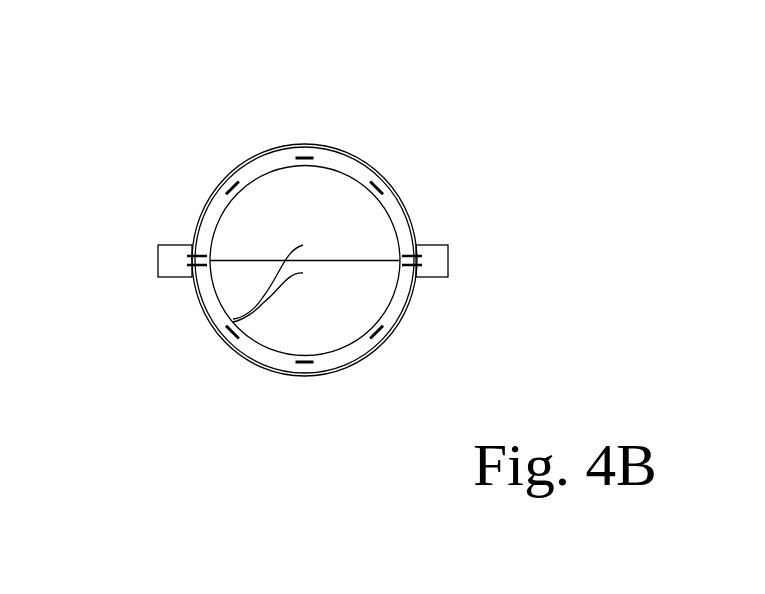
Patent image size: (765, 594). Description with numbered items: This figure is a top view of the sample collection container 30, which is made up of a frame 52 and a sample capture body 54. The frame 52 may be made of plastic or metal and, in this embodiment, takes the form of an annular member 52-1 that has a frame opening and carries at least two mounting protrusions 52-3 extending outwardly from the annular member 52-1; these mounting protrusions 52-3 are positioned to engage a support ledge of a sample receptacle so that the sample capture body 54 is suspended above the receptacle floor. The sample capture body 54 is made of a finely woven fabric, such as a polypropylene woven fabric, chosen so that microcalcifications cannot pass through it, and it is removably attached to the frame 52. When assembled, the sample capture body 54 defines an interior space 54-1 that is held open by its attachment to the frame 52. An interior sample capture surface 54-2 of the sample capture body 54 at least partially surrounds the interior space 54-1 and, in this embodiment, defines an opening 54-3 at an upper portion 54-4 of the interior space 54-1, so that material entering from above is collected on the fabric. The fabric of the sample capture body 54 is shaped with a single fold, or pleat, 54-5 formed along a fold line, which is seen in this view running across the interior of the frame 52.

The sample collection container 30 is at (440, 171).
The frame 52 is at (430, 213).
The annular member 52-1 is at (413, 231).
The mounting protrusions 52-3 is at (450, 263).
The sample capture body 54 is at (404, 207).
The interior space 54-1 is at (280, 209).
The interior sample capture surface 54-2 is at (233, 319).
The opening 54-3 is at (388, 307).
The upper portion 54-4 is at (363, 317).
The single fold 54-5 is at (237, 261).